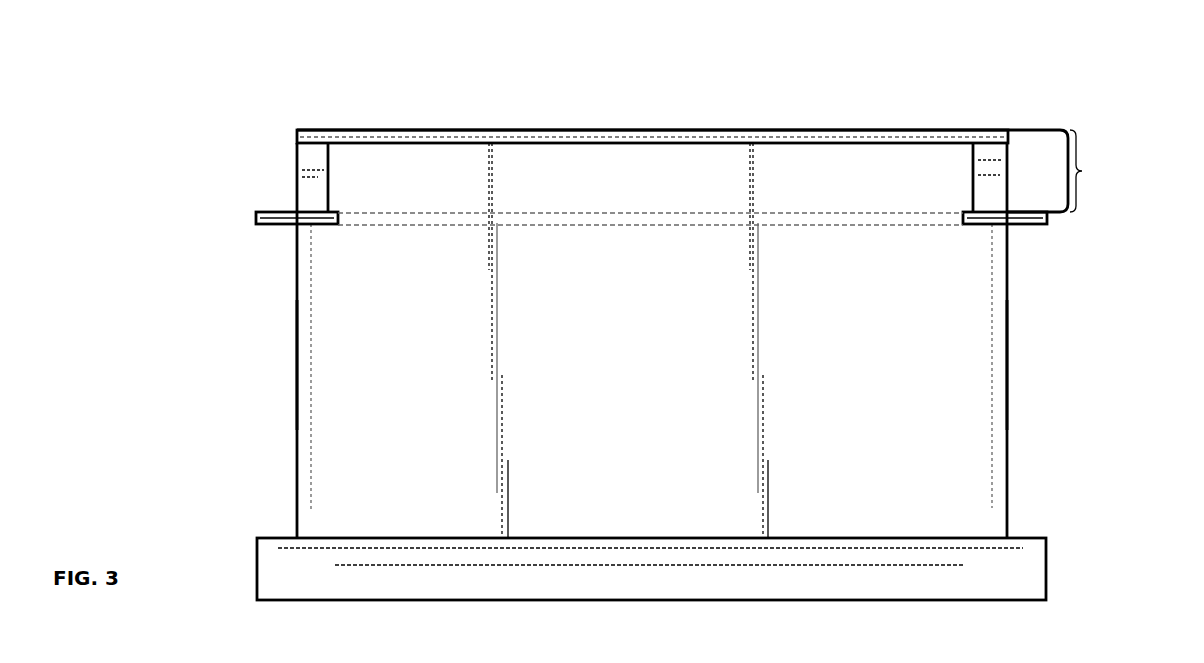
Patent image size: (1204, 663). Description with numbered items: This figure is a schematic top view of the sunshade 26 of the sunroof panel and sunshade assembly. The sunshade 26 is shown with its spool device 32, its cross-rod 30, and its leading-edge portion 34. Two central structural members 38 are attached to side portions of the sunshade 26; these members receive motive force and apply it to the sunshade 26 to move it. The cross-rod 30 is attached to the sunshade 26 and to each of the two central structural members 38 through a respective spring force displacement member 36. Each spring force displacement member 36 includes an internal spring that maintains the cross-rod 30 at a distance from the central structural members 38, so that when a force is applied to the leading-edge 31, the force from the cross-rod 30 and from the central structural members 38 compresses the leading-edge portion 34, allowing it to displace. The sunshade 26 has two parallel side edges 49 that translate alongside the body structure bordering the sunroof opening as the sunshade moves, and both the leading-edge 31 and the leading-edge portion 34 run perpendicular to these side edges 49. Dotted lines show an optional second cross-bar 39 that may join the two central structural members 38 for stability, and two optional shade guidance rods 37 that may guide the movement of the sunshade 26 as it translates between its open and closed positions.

The sunshade 26 is at (882, 352).
The cross-rod 30 is at (440, 130).
The leading-edge 31 is at (688, 130).
The spool device 32 is at (1015, 572).
The leading-edge portion 34 is at (1059, 171).
The spring force displacement member 36 is at (322, 173).
The shade guidance rod 37 is at (303, 432).
The central structural member 38 is at (256, 218).
The second cross-bar 39 is at (425, 225).
The side edge 49 is at (297, 365).